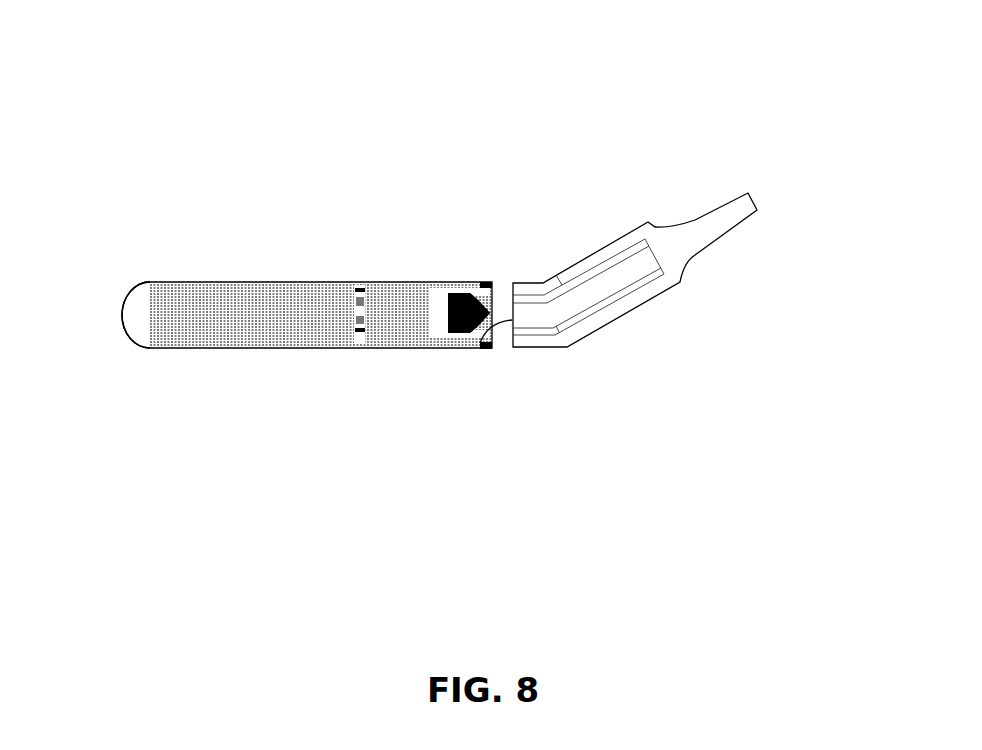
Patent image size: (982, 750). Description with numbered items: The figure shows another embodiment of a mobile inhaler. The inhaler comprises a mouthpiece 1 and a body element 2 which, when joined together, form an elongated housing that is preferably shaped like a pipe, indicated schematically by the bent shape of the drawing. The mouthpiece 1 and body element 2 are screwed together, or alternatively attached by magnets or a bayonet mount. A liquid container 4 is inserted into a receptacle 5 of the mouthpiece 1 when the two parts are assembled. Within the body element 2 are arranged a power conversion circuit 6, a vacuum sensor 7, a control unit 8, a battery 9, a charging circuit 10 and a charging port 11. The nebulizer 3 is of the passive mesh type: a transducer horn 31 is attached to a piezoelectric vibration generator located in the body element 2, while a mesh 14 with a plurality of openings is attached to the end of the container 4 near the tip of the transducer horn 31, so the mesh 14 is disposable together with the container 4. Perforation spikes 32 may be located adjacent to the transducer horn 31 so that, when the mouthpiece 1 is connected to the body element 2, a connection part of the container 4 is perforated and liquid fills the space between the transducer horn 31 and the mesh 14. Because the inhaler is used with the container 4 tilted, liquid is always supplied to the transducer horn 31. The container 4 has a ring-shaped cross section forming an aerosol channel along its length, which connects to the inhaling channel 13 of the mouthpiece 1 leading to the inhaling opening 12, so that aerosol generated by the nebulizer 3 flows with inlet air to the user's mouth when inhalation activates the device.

The mouthpiece 1 is at (625, 318).
The body element 2 is at (447, 352).
The nebulizer 3 is at (505, 280).
The liquid container 4 is at (615, 297).
The receptacle 5 is at (573, 340).
The power conversion circuit 6 is at (390, 320).
The vacuum sensor 7 is at (360, 290).
The control unit 8 is at (360, 330).
The battery 9 is at (273, 350).
The charging circuit 10 is at (123, 308).
The charging port 11 is at (136, 315).
The inhaling opening 12 is at (770, 192).
The inhaling channel 13 is at (665, 243).
The mesh 14 is at (480, 352).
The transducer horn 31 is at (455, 283).
The perforation spikes 32 is at (478, 283).